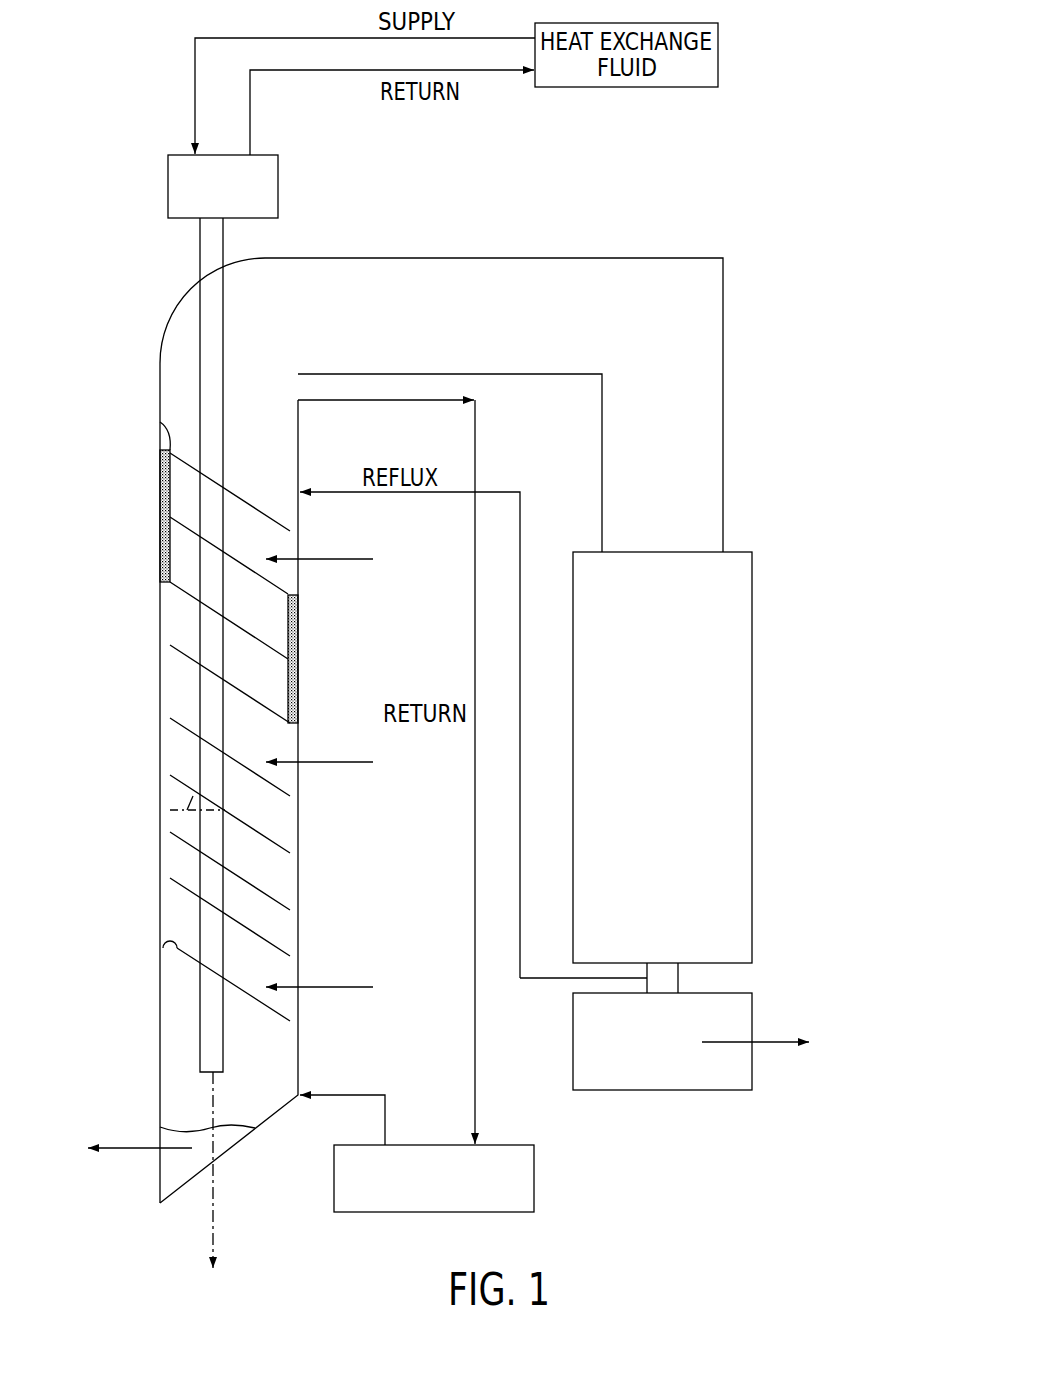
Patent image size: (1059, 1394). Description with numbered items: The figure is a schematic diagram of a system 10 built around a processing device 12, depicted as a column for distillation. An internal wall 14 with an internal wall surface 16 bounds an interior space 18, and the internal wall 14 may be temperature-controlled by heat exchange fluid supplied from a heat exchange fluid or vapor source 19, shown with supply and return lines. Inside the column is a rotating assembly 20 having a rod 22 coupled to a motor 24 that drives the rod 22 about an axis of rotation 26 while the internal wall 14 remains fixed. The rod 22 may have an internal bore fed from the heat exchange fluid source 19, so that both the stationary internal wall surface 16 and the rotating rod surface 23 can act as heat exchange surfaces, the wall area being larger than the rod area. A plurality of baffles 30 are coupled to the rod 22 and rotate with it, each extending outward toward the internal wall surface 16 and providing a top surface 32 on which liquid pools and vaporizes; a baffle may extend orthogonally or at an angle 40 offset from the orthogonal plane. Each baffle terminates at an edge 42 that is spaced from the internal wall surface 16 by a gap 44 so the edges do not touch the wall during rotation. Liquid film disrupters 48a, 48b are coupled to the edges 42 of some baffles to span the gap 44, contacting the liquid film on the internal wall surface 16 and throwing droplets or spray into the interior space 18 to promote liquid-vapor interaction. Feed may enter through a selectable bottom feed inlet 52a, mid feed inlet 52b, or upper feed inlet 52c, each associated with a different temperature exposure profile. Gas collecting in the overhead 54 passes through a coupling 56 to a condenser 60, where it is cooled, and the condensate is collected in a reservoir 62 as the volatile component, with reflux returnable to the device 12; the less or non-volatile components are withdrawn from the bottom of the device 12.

The system 10 is at (143, 117).
The processing device 12 is at (139, 450).
The internal wall 14 is at (160, 975).
The internal wall surface 16 is at (167, 1080).
The interior space 18 is at (284, 868).
The heat exchange fluid or vapor source 19 is at (534, 1177).
The rotating assembly 20 is at (214, 694).
The rod 22 is at (200, 708).
The rod surface 23 is at (216, 621).
The motor 24 is at (168, 188).
The axis of rotation 26 is at (213, 1213).
The baffles 30 is at (245, 498).
The top surface 32 is at (187, 771).
The angle 40 is at (170, 808).
The edge 42 is at (160, 422).
The gap 44 is at (172, 933).
The liquid film disrupter 48a is at (160, 543).
The liquid film disrupter 48b is at (300, 648).
The feed inlet 52a is at (350, 990).
The feed inlet 52b is at (350, 765).
The feed inlet 52c is at (350, 562).
The overhead 54 is at (178, 365).
The coupling 56 is at (481, 282).
The condenser 60 is at (752, 655).
The reservoir 62 is at (573, 1042).